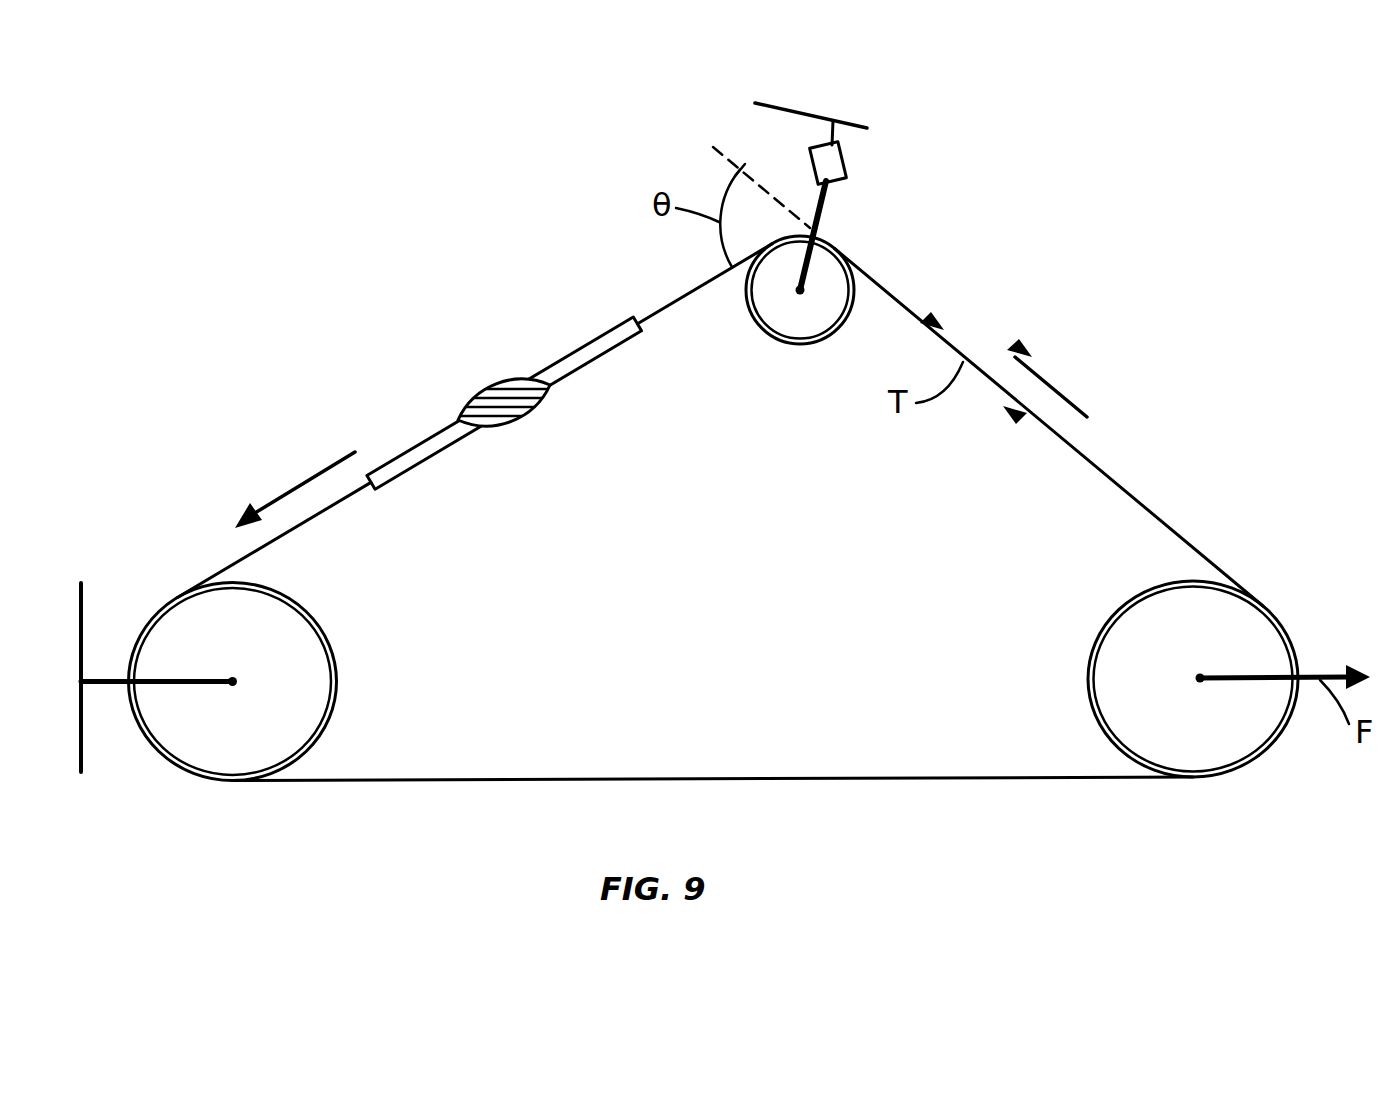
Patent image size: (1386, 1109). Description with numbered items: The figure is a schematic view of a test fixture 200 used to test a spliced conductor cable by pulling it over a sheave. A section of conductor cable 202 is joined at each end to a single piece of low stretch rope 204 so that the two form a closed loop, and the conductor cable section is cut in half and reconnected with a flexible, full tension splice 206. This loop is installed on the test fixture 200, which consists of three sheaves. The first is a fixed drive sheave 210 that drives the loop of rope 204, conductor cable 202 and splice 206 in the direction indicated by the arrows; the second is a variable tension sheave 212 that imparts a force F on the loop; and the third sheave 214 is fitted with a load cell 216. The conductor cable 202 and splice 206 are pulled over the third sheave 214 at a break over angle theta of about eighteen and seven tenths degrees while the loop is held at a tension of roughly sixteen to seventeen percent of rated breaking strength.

The test fixture 200 is at (1006, 205).
The conductor cable 202 is at (420, 468).
The low stretch rope 204 is at (1133, 500).
The full tension splice 206 is at (512, 414).
The fixed drive sheave 210 is at (190, 740).
The variable tension sheave 212 is at (1220, 750).
The third sheave 214 is at (773, 317).
The load cell 216 is at (843, 164).